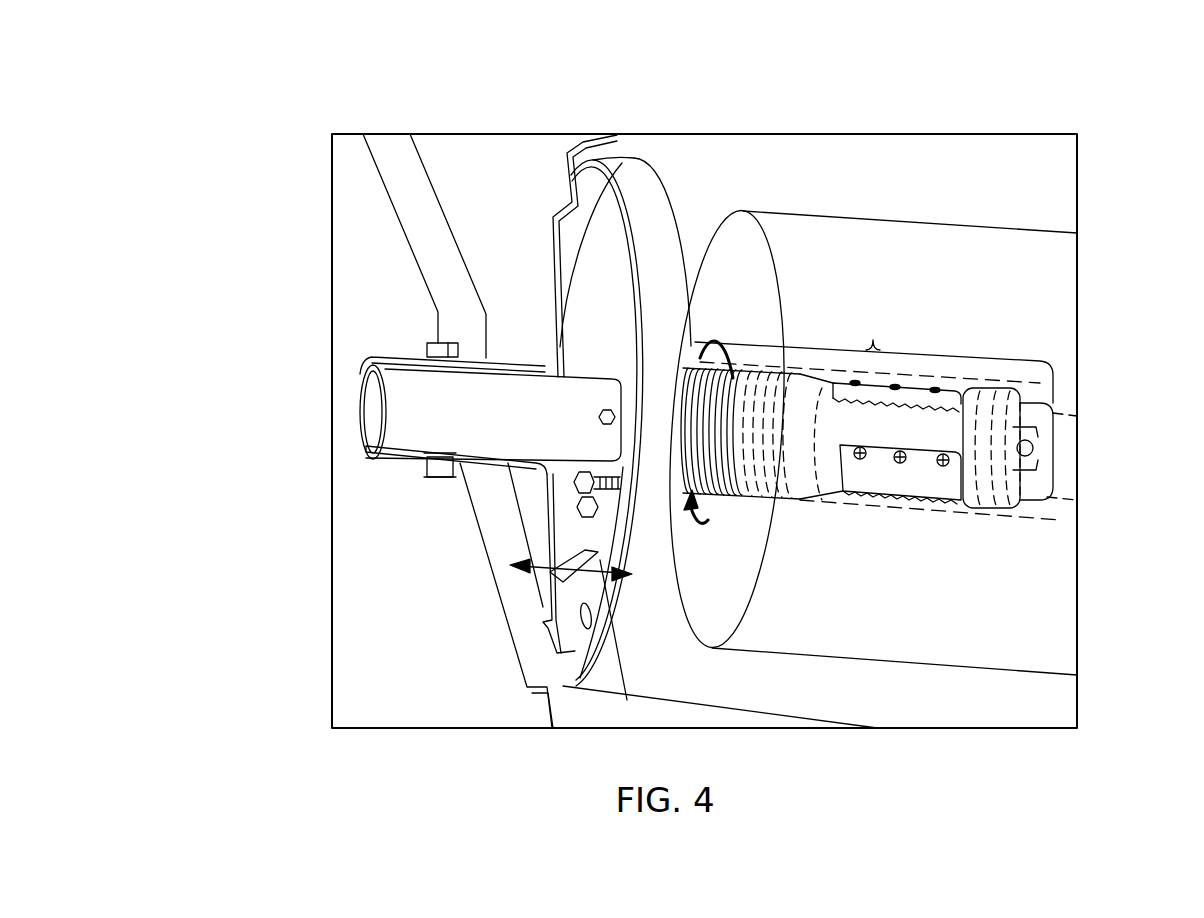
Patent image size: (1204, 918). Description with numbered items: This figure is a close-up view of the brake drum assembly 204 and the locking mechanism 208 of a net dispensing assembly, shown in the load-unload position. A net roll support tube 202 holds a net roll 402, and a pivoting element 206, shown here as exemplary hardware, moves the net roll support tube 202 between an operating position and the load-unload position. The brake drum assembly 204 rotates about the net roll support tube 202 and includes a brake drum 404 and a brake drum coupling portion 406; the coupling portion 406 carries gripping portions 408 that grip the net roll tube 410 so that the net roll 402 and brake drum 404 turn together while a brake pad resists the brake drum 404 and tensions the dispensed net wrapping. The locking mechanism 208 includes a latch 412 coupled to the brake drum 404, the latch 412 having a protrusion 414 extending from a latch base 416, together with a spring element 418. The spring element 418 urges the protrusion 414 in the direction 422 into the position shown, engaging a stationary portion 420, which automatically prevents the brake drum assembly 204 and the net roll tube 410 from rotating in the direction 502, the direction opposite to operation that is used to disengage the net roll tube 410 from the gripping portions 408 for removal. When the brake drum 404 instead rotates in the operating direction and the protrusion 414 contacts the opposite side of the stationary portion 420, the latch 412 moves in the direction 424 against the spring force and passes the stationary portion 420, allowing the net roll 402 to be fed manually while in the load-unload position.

The net roll support tube 202 is at (985, 436).
The brake drum assembly 204 is at (822, 105).
The pivoting element 206 is at (433, 343).
The locking mechanism 208 is at (390, 557).
The net roll 402 is at (902, 217).
The brake drum 404 is at (644, 438).
The brake drum coupling portion 406 is at (873, 350).
The gripping portions 408 is at (913, 393).
The net roll tube 410 is at (850, 506).
The latch 412 is at (577, 537).
The protrusion 414 is at (548, 571).
The latch base 416 is at (578, 518).
The spring element 418 is at (578, 490).
The stationary portion 420 is at (552, 630).
The direction 422 is at (542, 585).
The direction 424 is at (627, 700).
The direction 502 is at (704, 522).